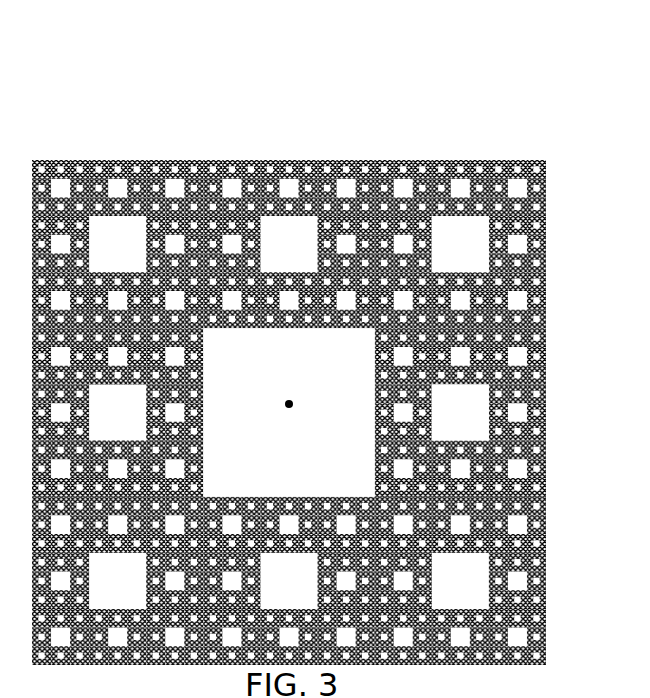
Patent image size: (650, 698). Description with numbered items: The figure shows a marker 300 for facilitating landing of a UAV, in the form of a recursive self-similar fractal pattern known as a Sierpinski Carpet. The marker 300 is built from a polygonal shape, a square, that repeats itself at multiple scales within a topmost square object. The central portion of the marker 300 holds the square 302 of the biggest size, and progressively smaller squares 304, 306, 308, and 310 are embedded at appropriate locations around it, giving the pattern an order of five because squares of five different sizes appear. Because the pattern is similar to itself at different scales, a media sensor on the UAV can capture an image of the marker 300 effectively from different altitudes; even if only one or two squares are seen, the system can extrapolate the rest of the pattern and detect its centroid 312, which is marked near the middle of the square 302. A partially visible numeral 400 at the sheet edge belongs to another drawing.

The marker 300 is at (497, 52).
The square 302 is at (263, 361).
The square 304 is at (478, 418).
The square 306 is at (478, 252).
The square 308 is at (538, 430).
The square 310 is at (538, 493).
The centroid 312 is at (286, 407).
The fractal antenna structure 400 is at (478, 697).